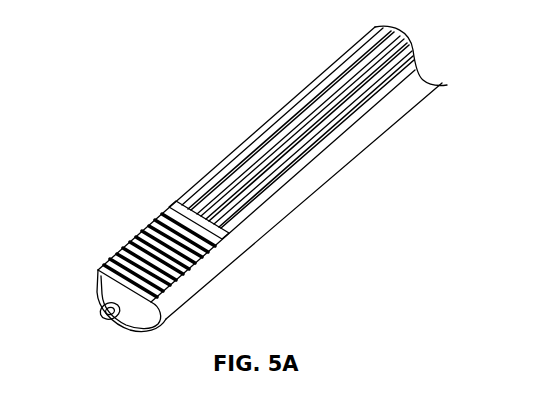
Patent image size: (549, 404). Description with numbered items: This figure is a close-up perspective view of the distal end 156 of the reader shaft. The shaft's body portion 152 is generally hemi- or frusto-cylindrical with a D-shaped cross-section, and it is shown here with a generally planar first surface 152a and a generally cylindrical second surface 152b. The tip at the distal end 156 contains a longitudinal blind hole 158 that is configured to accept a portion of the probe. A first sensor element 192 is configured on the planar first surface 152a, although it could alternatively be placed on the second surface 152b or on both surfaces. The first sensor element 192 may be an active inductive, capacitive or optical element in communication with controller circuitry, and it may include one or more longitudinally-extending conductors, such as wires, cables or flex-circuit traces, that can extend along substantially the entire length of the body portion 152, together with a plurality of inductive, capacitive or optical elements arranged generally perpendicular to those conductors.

The body portion 152 is at (262, 174).
The first surface 152a is at (256, 156).
The second surface 152b is at (390, 108).
The distal end 156 is at (262, 174).
The longitudinal blind hole 158 is at (105, 311).
The first sensor element 192 is at (284, 111).